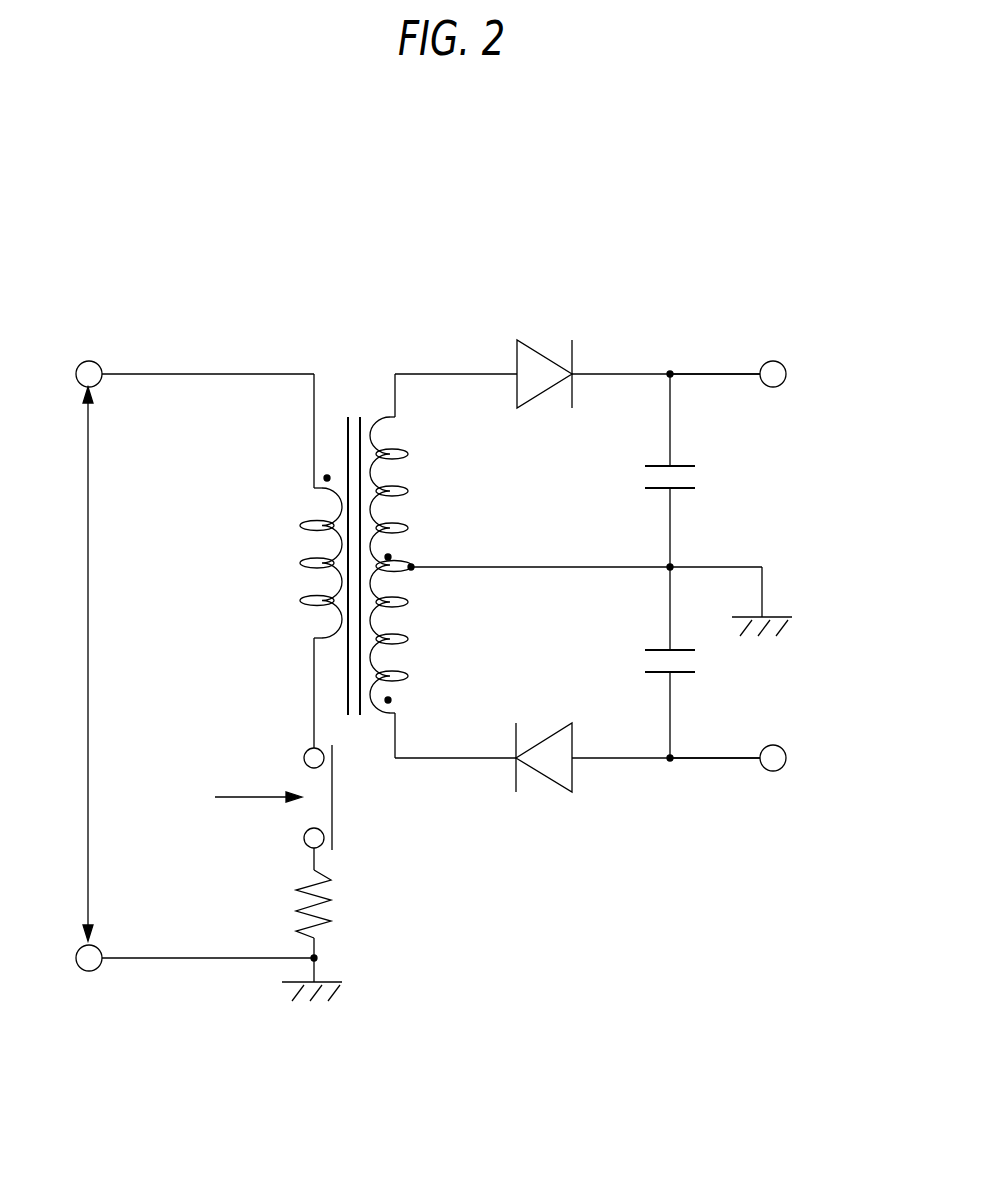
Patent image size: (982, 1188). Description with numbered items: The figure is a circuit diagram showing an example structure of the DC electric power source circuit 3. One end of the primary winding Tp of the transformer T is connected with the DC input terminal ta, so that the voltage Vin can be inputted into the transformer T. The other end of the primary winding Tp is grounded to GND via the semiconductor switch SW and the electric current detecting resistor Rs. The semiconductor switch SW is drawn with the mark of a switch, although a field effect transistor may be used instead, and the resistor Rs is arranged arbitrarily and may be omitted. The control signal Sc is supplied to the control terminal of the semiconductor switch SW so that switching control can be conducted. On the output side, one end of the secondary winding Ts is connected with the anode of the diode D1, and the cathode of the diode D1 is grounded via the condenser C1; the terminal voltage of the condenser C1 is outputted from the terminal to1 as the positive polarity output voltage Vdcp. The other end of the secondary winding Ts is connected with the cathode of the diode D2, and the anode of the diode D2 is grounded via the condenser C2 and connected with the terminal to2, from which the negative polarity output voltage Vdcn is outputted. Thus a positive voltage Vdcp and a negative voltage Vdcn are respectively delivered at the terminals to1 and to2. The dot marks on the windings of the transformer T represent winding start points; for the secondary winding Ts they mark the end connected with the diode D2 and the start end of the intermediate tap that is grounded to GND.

The DC electric power source circuit 3 is at (767, 208).
The DC input terminal ta is at (94, 360).
The voltage Vin is at (68, 664).
The transformer T is at (400, 306).
The primary winding Tp is at (336, 490).
The secondary winding Ts is at (376, 418).
The diode D1 is at (531, 345).
The diode D2 is at (557, 727).
The condenser C1 is at (658, 464).
The condenser C2 is at (658, 648).
The ground GND is at (762, 589).
The terminal to1 is at (786, 374).
The terminal to2 is at (786, 758).
The positive polarity output voltage Vdcp is at (757, 353).
The negative polarity output voltage Vdcn is at (755, 783).
The semiconductor switch SW is at (344, 807).
The control signal Sc is at (241, 803).
The electric current detecting resistor Rs is at (333, 920).